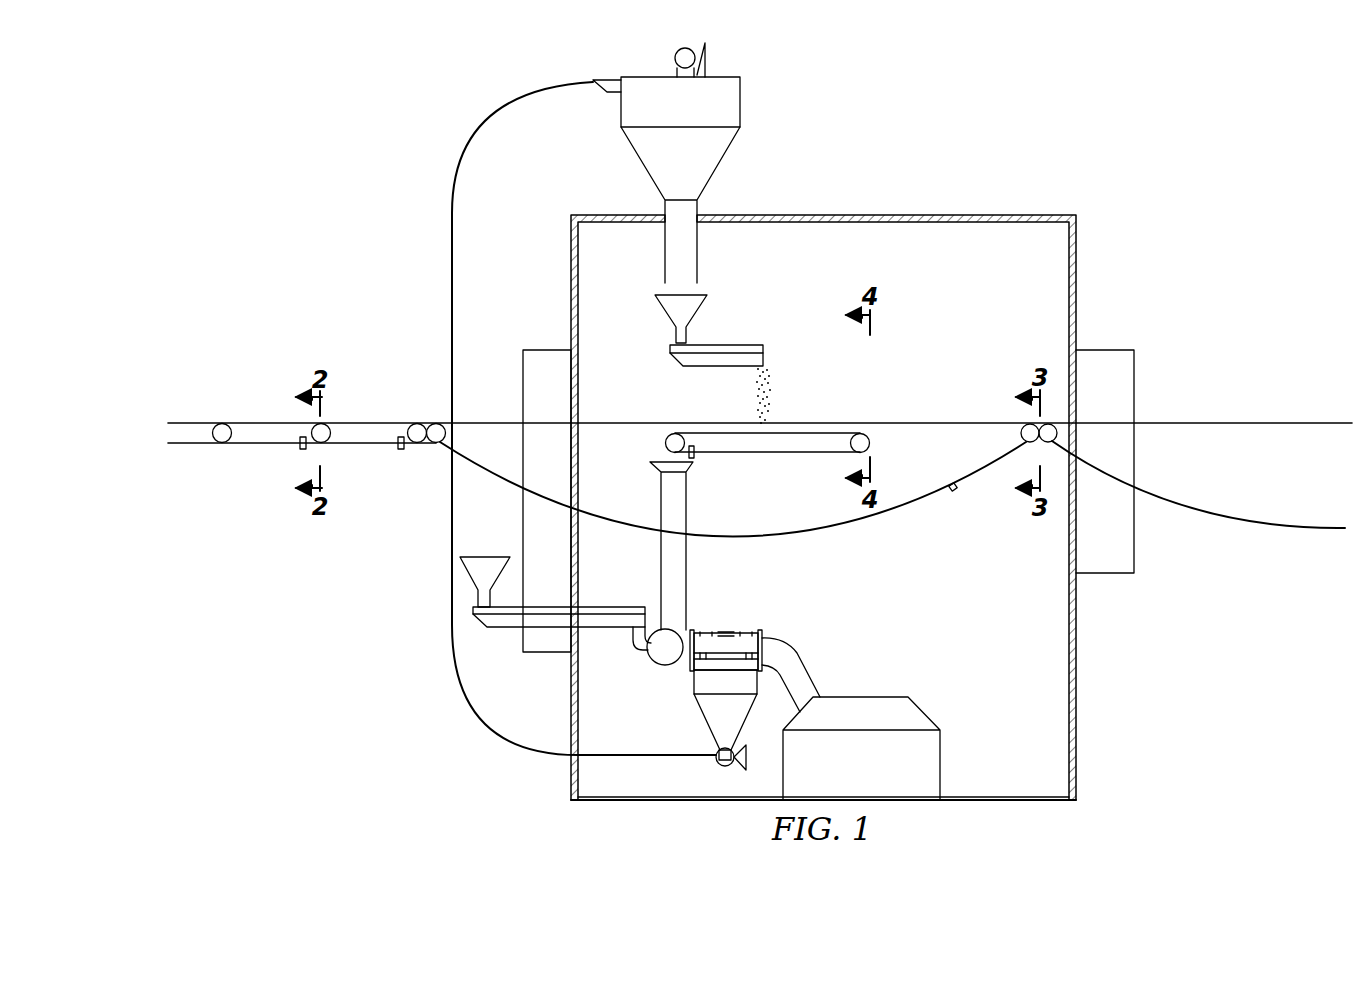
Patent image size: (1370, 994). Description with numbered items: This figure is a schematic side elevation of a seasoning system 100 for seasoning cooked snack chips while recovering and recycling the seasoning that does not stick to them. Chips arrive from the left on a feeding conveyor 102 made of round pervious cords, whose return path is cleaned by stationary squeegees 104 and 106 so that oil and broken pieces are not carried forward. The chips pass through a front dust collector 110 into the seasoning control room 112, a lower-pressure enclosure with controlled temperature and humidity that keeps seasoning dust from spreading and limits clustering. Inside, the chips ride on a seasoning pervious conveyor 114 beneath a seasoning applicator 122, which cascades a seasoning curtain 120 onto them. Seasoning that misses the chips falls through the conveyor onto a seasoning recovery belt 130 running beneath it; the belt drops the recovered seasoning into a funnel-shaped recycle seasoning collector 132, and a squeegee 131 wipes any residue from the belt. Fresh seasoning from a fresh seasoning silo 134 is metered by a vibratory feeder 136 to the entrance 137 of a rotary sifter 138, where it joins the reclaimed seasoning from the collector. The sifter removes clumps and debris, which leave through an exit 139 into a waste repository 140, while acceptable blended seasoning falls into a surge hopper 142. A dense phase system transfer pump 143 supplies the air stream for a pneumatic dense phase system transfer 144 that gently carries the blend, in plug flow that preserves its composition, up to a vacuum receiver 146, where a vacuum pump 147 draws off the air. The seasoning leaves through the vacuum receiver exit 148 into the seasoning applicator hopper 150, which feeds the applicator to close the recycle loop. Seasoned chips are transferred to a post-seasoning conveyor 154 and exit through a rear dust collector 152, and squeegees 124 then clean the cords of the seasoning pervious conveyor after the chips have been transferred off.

The seasoning system 100 is at (366, 134).
The feeding conveyor 102 is at (374, 421).
The squeegee 104 is at (301, 449).
The squeegee 106 is at (401, 450).
The front dust collector 110 is at (541, 350).
The seasoning control room 112 is at (571, 232).
The seasoning pervious conveyor 114 is at (622, 421).
The seasoning curtain 120 is at (771, 392).
The seasoning applicator 122 is at (765, 357).
The squeegees 124 is at (955, 491).
The seasoning recovery belt 130 is at (785, 455).
The squeegee 131 is at (695, 459).
The recycle seasoning collector 132 is at (689, 563).
The fresh seasoning silo 134 is at (487, 557).
The vibratory feeder 136 is at (618, 606).
The entrance of the sifter 137 is at (656, 661).
The sifter 138 is at (750, 631).
The exit 139 is at (796, 651).
The waste repository 140 is at (943, 759).
The surge hopper 142 is at (706, 716).
The dense phase system transfer pump 143 is at (714, 762).
The pneumatic dense phase system transfer 144 is at (622, 755).
The vacuum receiver 146 is at (741, 98).
The vacuum pump 147 is at (675, 60).
The vacuum receiver exit 148 is at (719, 163).
The seasoning applicator hopper 150 is at (662, 316).
The rear dust collector 152 is at (1110, 350).
The post-seasoning conveyor 154 is at (1199, 421).